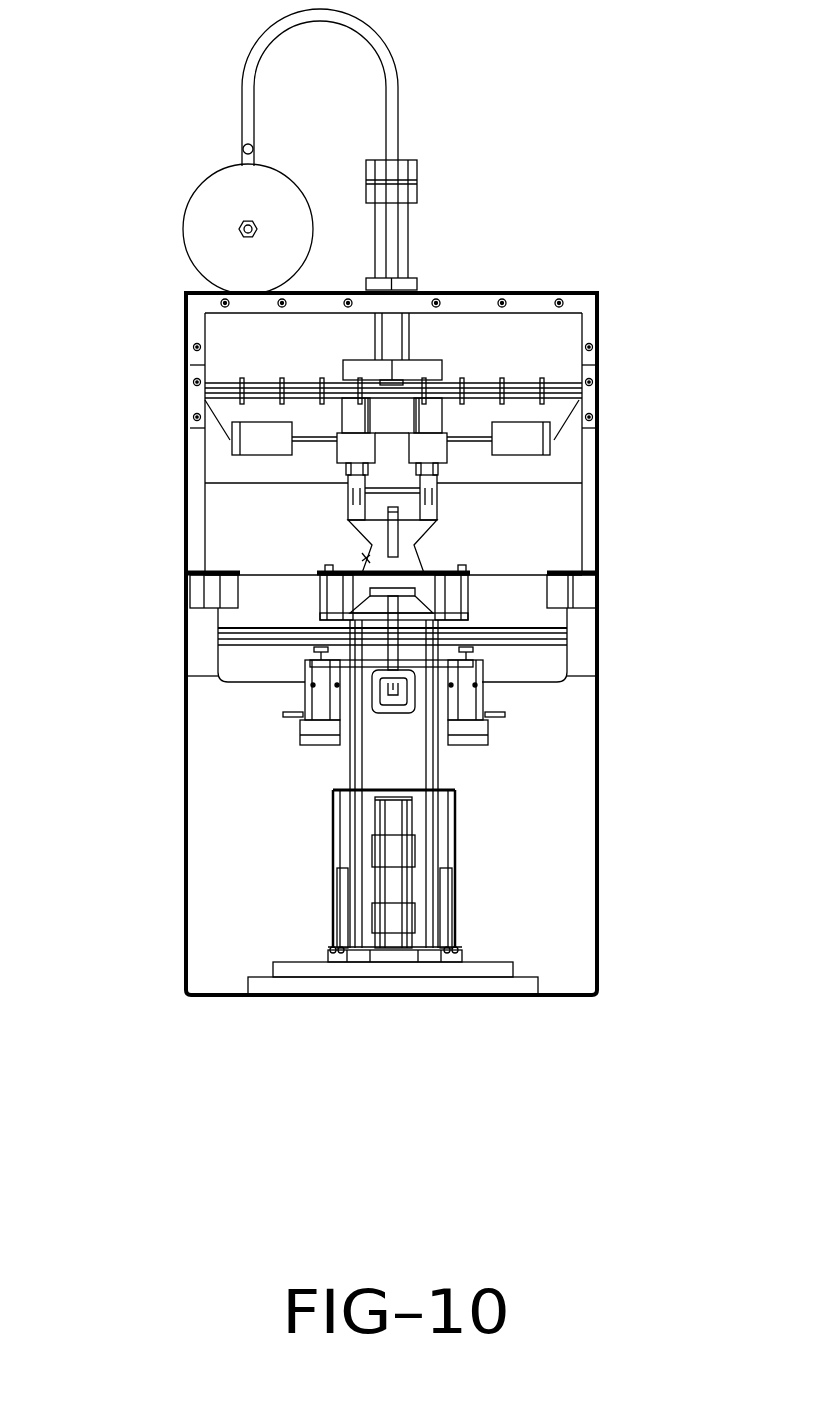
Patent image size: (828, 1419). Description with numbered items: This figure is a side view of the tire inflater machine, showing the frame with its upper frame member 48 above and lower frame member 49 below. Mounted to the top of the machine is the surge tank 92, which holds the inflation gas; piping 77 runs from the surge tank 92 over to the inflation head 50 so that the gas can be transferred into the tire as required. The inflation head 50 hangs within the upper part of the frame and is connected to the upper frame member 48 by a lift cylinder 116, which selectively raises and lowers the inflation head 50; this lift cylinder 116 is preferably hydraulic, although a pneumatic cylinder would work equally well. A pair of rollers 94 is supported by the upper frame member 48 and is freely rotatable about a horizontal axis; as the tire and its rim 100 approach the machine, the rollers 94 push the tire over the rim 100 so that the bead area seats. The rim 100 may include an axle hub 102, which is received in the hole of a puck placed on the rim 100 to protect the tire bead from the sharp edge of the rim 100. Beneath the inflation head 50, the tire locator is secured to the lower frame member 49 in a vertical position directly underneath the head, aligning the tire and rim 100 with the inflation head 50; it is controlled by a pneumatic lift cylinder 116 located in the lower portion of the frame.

The upper frame member 48 is at (597, 343).
The lower frame member 49 is at (598, 918).
The inflation head 50 is at (457, 372).
The piping 77 is at (390, 99).
The surge tank 92 is at (203, 238).
The rollers 94 is at (358, 507).
The rim 100 is at (407, 530).
The axle hub 102 is at (398, 508).
The lift cylinder 116 is at (392, 248).